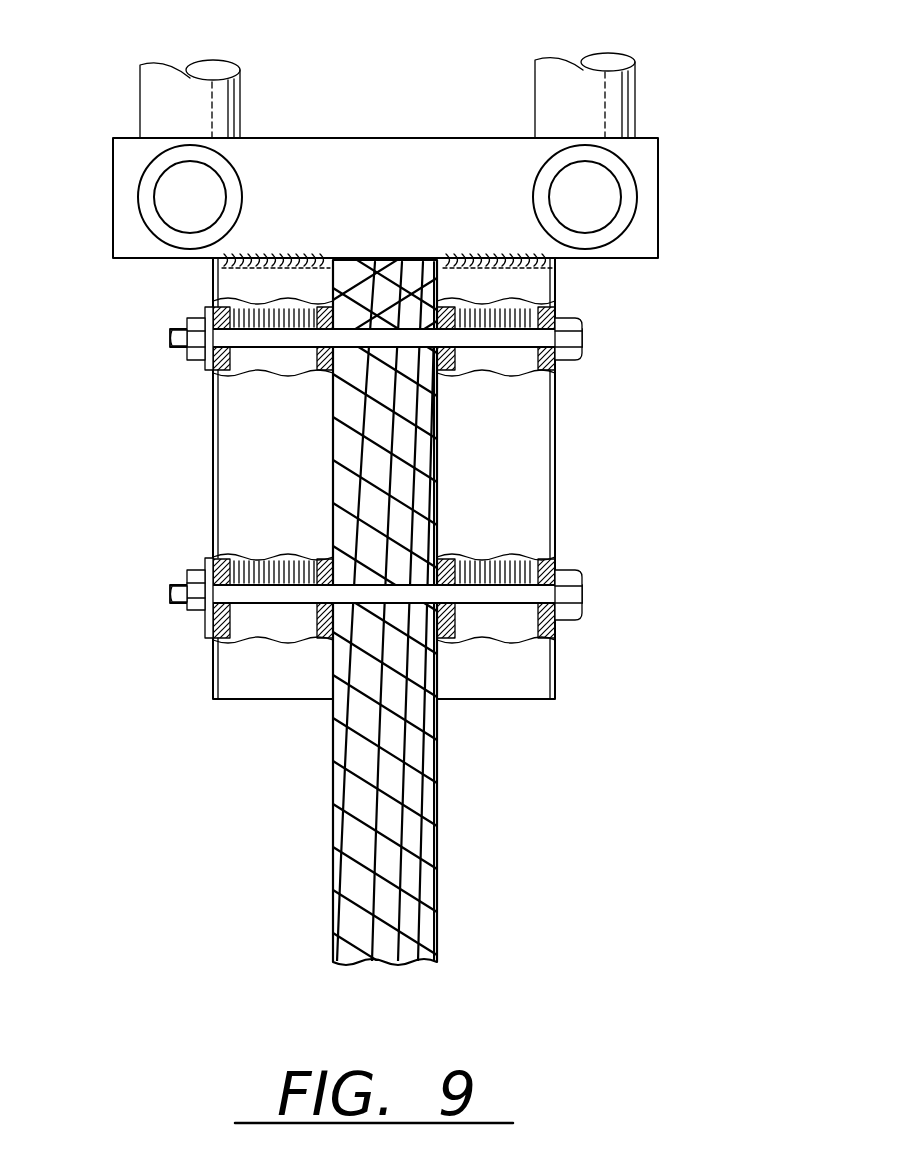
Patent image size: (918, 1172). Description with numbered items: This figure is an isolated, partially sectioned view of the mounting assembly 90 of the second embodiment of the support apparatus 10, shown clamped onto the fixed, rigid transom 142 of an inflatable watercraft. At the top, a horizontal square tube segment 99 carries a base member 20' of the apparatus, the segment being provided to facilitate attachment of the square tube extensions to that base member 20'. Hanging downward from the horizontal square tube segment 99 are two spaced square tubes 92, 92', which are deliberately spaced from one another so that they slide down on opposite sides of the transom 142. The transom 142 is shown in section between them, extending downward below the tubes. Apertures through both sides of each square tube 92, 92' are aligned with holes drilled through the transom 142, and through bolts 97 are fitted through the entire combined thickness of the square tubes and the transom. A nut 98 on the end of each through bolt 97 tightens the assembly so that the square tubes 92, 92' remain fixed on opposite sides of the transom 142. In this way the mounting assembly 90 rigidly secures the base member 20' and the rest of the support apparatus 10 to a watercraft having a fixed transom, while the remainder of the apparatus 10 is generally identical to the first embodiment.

The support apparatus 10 is at (718, 200).
The base member 20' is at (387, 108).
The mounting assembly 90 is at (522, 522).
The square tube 92 is at (189, 478).
The square tube 92' is at (568, 478).
The through bolt 97 is at (513, 336).
The nut 98 is at (190, 320).
The horizontal square tube segment 99 is at (650, 149).
The transom 142 is at (425, 830).